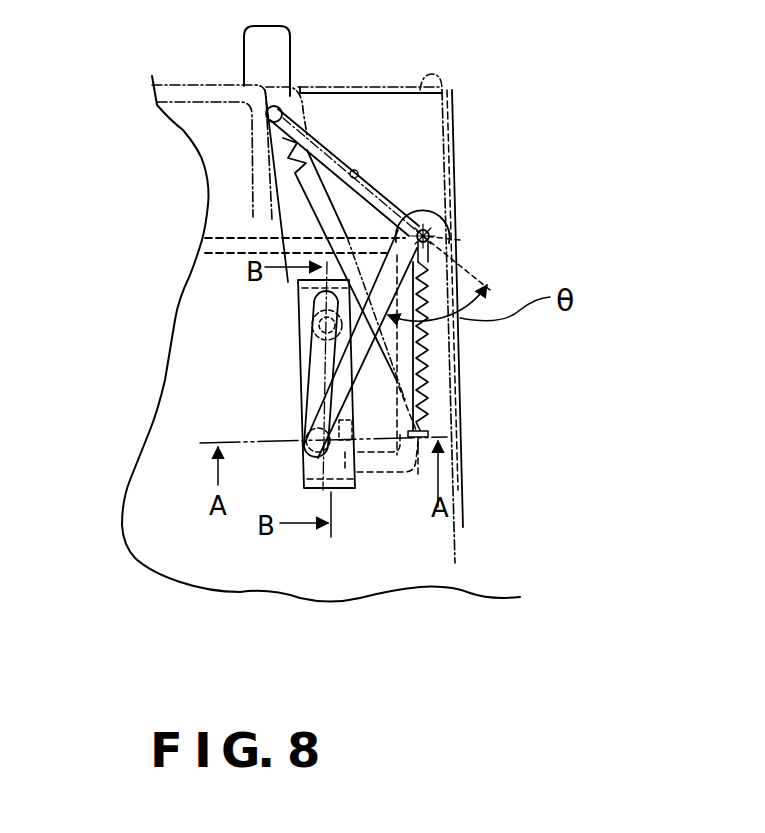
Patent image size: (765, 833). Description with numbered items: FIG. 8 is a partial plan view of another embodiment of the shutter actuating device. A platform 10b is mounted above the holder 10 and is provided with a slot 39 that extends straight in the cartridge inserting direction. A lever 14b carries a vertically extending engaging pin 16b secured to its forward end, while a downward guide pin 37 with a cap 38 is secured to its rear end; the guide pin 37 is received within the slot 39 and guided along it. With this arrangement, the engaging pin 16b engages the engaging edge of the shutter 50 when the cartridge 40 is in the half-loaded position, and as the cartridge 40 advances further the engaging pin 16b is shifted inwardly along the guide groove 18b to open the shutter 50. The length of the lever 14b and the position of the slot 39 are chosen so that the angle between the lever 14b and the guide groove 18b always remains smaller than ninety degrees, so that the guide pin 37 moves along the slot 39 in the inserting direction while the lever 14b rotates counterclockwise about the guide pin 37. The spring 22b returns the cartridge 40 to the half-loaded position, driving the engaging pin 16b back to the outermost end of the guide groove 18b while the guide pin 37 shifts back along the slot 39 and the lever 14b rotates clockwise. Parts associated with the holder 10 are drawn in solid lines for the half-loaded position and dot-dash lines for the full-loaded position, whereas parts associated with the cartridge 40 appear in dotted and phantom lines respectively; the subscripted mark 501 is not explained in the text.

The holder 10 is at (476, 441).
The platform 10b is at (307, 373).
The lever 14b is at (450, 262).
The engaging pin 16b is at (445, 215).
The guide groove 18b is at (362, 173).
The spring 22b is at (420, 330).
The guide pin 37 is at (300, 428).
The cap 38 is at (305, 435).
The slot 39 is at (320, 350).
The cartridge 40 is at (468, 550).
The shutter 50 is at (372, 475).
The reference line 501 is at (460, 240).